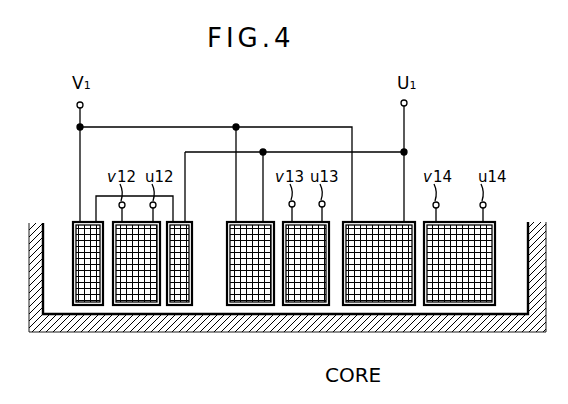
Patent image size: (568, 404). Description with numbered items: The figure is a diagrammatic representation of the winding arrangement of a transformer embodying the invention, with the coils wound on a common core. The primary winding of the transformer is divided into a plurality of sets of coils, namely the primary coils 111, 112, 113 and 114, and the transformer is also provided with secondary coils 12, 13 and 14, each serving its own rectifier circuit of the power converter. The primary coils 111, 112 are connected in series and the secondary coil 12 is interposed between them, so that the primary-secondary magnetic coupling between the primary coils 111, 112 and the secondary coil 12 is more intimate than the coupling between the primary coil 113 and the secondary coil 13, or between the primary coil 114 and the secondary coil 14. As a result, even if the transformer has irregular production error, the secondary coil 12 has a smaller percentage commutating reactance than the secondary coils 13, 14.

The primary coil 111 is at (92, 299).
The secondary coil 12 is at (144, 299).
The primary coil 112 is at (185, 299).
The primary coil 113 is at (250, 299).
The secondary coil 13 is at (313, 299).
The primary coil 114 is at (388, 299).
The secondary coil 14 is at (463, 299).